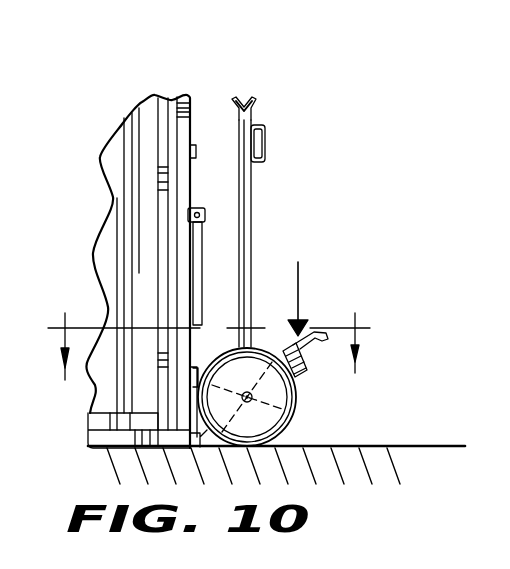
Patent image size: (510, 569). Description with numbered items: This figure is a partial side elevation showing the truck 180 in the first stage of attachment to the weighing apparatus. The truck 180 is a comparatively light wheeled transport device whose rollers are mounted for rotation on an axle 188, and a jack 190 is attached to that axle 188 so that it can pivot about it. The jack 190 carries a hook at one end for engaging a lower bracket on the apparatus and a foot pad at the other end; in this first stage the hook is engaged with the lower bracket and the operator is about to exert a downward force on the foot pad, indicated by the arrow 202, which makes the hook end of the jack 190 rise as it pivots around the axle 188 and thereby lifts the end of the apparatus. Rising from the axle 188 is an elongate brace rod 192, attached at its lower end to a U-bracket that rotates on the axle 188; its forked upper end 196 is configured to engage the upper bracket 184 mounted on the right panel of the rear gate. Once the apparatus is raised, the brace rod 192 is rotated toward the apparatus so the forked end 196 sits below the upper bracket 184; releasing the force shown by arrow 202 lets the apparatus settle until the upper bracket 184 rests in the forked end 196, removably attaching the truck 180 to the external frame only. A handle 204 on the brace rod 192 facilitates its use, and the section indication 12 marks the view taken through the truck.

The section line 12- 12 is at (206, 332).
The truck 180 is at (327, 253).
The upper bracket 184 is at (195, 147).
The axle 188 is at (252, 402).
The jack 190 is at (313, 369).
The brace rod 192 is at (252, 238).
The forked upper end 196 is at (268, 100).
The arrow 202 is at (298, 278).
The handle 204 is at (267, 141).